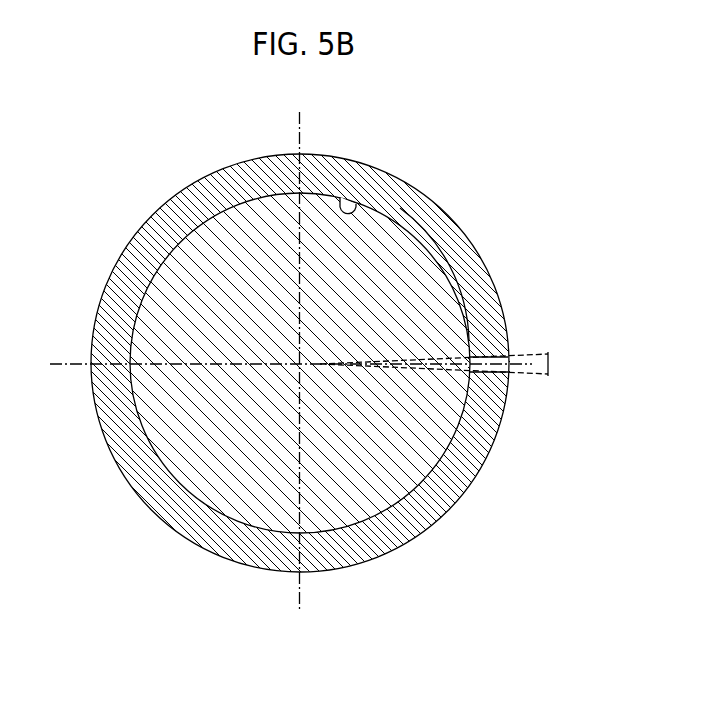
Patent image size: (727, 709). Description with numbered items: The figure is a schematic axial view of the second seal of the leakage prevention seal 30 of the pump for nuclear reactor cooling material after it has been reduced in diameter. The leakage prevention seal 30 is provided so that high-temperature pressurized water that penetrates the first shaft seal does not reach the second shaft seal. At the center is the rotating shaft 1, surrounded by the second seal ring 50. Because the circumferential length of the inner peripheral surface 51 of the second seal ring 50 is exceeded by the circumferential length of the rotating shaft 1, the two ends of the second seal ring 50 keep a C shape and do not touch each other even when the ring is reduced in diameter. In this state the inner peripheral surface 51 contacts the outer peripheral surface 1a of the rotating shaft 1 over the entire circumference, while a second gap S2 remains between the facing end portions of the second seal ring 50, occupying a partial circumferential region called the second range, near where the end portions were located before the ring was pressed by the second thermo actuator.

The leakage prevention seal 30 is at (451, 167).
The second seal ring 50 is at (137, 232).
The inner peripheral surface 51 is at (360, 208).
The rotating shaft 1 is at (417, 481).
The outer peripheral surface 1a is at (452, 272).
The second gap S2 is at (488, 362).